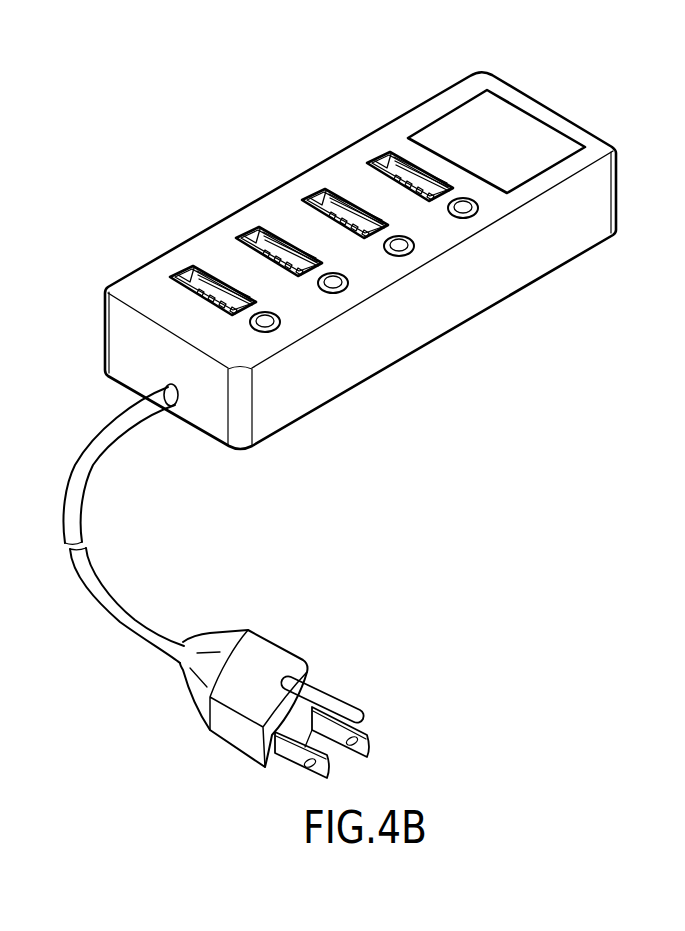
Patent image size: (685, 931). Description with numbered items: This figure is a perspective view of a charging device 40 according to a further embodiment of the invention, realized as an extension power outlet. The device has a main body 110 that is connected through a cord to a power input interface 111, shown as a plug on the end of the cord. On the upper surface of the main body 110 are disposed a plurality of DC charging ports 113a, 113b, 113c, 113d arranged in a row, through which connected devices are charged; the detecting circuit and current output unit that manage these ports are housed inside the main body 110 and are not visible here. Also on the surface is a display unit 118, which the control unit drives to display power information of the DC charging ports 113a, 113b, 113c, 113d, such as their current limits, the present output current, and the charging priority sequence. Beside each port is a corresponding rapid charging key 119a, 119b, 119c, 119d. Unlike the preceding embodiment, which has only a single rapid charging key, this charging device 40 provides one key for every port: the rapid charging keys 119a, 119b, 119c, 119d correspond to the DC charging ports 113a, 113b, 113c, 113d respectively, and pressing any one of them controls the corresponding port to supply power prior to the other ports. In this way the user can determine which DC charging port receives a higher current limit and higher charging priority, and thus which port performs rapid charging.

The charging device 40 is at (84, 65).
The main body 110 is at (548, 113).
The power input interface 111 is at (216, 582).
The DC charging port 113a is at (183, 272).
The DC charging port 113b is at (250, 238).
The DC charging port 113c is at (313, 197).
The DC charging port 113d is at (383, 165).
The display unit 118 is at (462, 128).
The rapid charging key 119a is at (280, 327).
The rapid charging key 119b is at (348, 287).
The rapid charging key 119c is at (413, 251).
The rapid charging key 119d is at (477, 212).